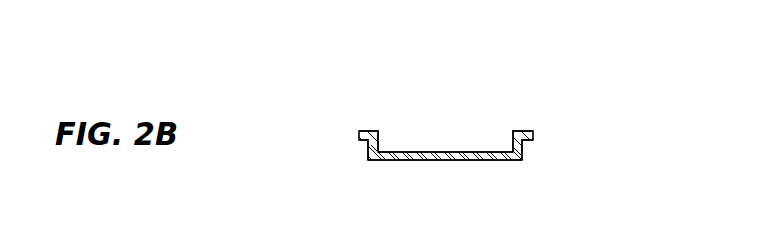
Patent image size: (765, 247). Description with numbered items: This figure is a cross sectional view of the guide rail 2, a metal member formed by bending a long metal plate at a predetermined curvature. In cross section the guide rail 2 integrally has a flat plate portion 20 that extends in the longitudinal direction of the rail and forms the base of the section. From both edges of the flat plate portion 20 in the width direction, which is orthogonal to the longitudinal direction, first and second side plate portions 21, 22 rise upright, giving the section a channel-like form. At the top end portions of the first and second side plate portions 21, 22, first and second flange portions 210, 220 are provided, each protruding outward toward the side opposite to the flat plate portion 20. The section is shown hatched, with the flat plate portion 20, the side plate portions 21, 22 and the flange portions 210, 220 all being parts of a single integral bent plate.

The guide rail 2 is at (411, 118).
The flat plate portion 20 is at (453, 155).
The first side plate portion 21 is at (523, 159).
The second side plate portion 22 is at (368, 158).
The first flange portion 210 is at (527, 139).
The second flange portion 220 is at (360, 131).